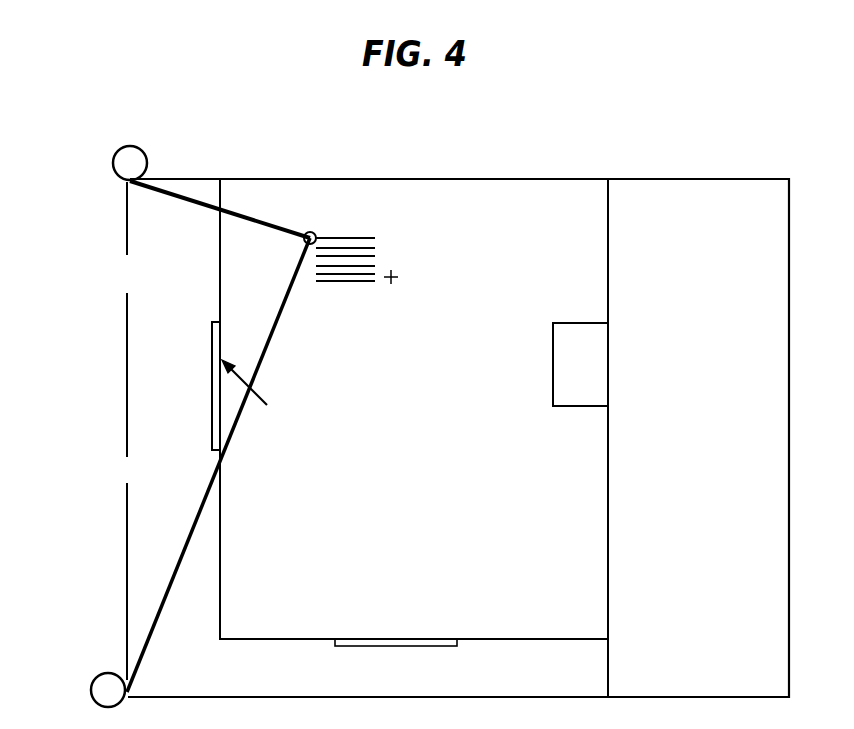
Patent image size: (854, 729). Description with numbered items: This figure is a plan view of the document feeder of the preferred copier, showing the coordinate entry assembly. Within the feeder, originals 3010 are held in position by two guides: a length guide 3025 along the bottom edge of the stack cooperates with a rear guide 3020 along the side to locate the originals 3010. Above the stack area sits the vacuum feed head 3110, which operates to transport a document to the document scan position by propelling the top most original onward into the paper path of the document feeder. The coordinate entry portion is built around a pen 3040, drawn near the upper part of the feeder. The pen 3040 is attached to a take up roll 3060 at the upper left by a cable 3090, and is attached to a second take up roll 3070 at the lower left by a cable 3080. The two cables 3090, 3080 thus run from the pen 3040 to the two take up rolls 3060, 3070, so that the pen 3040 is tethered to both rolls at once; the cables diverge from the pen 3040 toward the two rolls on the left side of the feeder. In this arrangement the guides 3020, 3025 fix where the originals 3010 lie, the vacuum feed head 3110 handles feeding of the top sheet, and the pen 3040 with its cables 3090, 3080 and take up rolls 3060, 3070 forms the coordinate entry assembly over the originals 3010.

The originals 3010 is at (526, 531).
The rear guide 3020 is at (212, 348).
The length guide 3025 is at (430, 647).
The pen 3040 is at (317, 232).
The take up roll 3060 is at (120, 148).
The take up roll 3070 is at (100, 678).
The cable 3080 is at (203, 497).
The cable 3090 is at (200, 204).
The vacuum feed head 3110 is at (571, 323).